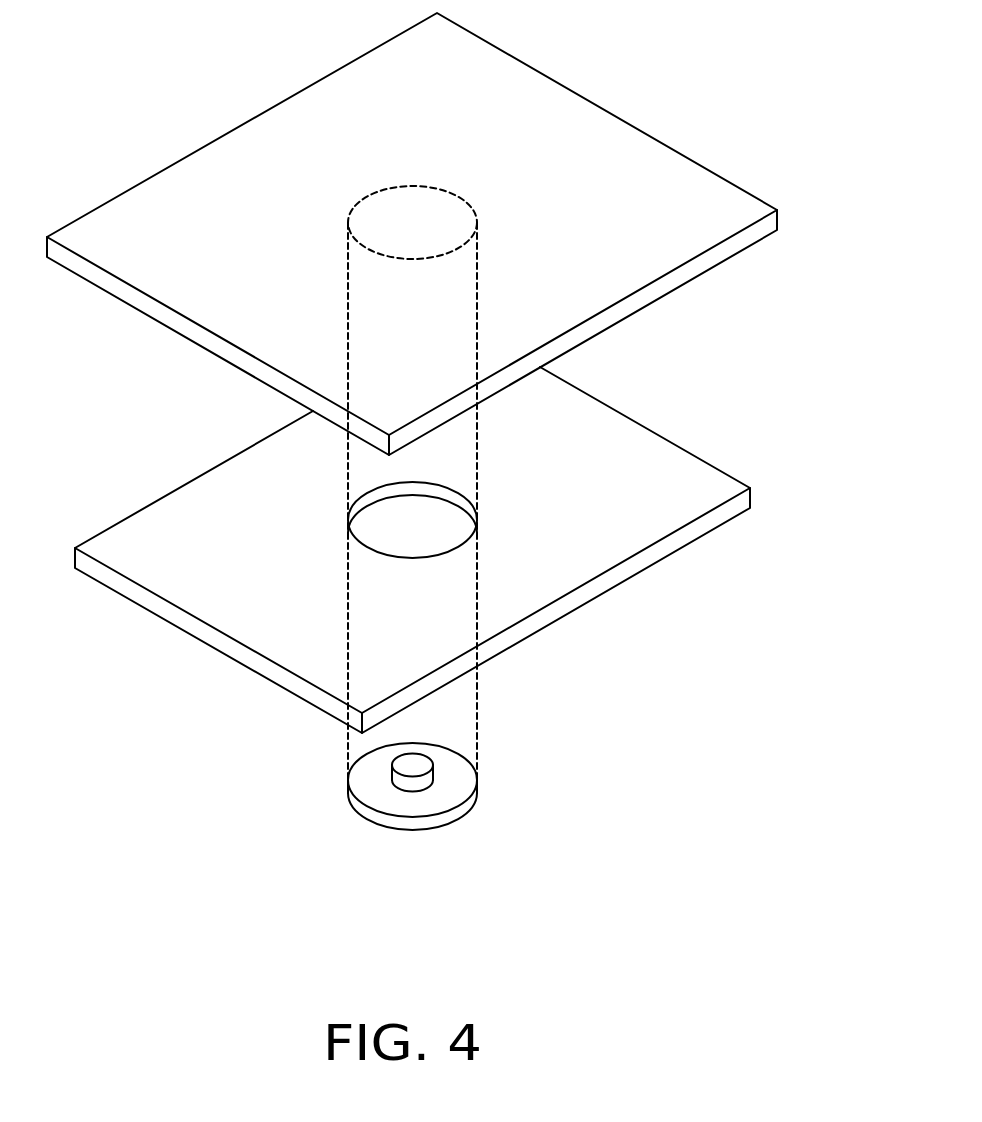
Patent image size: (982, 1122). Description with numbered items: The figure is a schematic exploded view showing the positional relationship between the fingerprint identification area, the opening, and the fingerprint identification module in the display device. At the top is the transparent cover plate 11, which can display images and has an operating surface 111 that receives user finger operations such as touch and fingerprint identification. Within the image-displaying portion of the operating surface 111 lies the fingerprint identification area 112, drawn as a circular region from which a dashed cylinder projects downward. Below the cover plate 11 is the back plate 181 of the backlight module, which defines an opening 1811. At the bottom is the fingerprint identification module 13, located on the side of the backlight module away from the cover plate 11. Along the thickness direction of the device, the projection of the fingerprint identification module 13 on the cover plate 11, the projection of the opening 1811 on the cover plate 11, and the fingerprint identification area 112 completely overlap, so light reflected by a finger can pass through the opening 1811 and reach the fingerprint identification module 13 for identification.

The cover plate 11 is at (432, 396).
The operating surface 111 is at (693, 197).
The fingerprint identification area 112 is at (418, 220).
The back plate 181 is at (449, 550).
The opening 1811 is at (418, 517).
The fingerprint identification module 13 is at (450, 817).